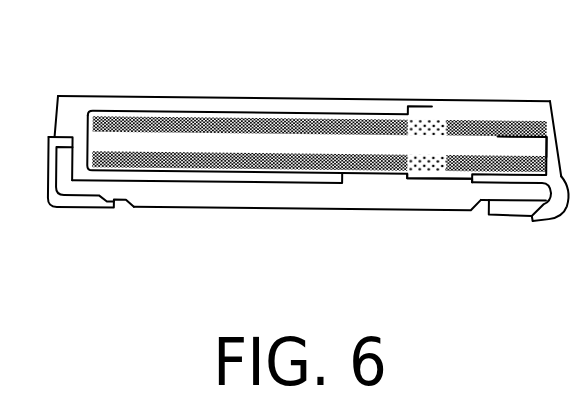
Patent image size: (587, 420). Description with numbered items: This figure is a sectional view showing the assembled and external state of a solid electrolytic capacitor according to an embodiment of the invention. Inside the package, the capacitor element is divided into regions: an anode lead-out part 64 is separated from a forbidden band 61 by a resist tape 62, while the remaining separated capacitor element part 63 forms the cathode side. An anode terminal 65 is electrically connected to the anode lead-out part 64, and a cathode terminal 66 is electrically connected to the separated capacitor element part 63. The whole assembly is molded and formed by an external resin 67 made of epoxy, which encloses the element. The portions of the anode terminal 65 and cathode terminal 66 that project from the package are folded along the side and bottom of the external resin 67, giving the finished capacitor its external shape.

The forbidden band 61 is at (421, 178).
The resist tape 62 is at (432, 118).
The capacitor element part 63 is at (497, 147).
The anode lead-out part 64 is at (173, 145).
The anode terminal 65 is at (548, 203).
The cathode terminal 66 is at (105, 199).
The external resin 67 is at (250, 197).